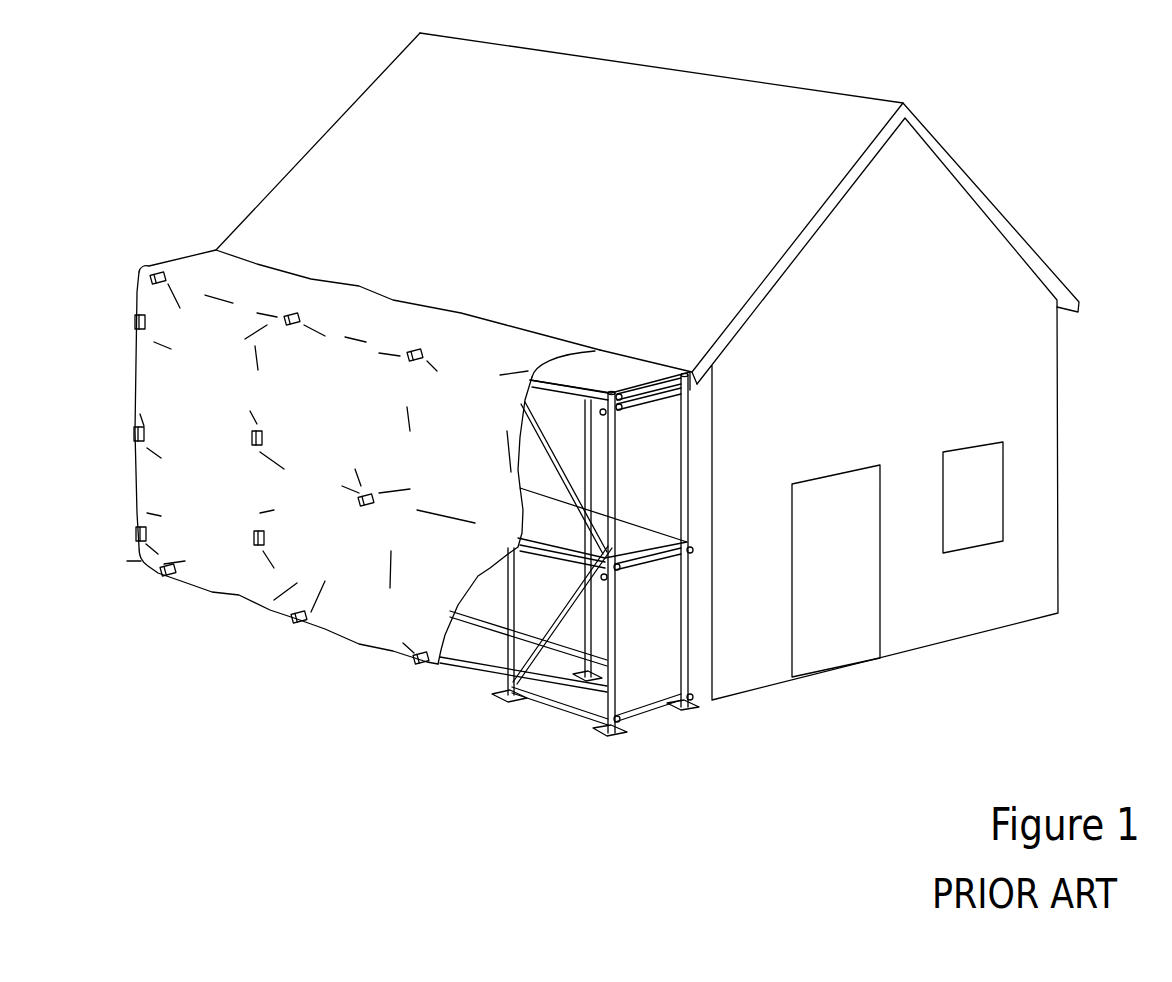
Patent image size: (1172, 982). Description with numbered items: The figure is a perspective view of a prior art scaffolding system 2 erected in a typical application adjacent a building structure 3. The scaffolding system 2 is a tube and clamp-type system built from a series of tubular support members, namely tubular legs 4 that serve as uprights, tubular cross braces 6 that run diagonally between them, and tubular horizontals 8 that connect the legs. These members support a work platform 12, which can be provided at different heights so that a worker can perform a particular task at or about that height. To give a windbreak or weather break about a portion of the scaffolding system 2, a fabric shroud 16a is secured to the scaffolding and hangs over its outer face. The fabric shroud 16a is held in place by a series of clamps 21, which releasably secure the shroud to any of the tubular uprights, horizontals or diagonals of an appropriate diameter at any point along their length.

The scaffolding system 2 is at (607, 559).
The building structure 3 is at (1037, 518).
The tubular legs 4 is at (612, 465).
The tubular cross braces 6 is at (573, 620).
The tubular horizontals 8 is at (577, 397).
The work platform 12 is at (615, 372).
The fabric shroud 16a is at (359, 605).
The clamps 21 is at (132, 310).